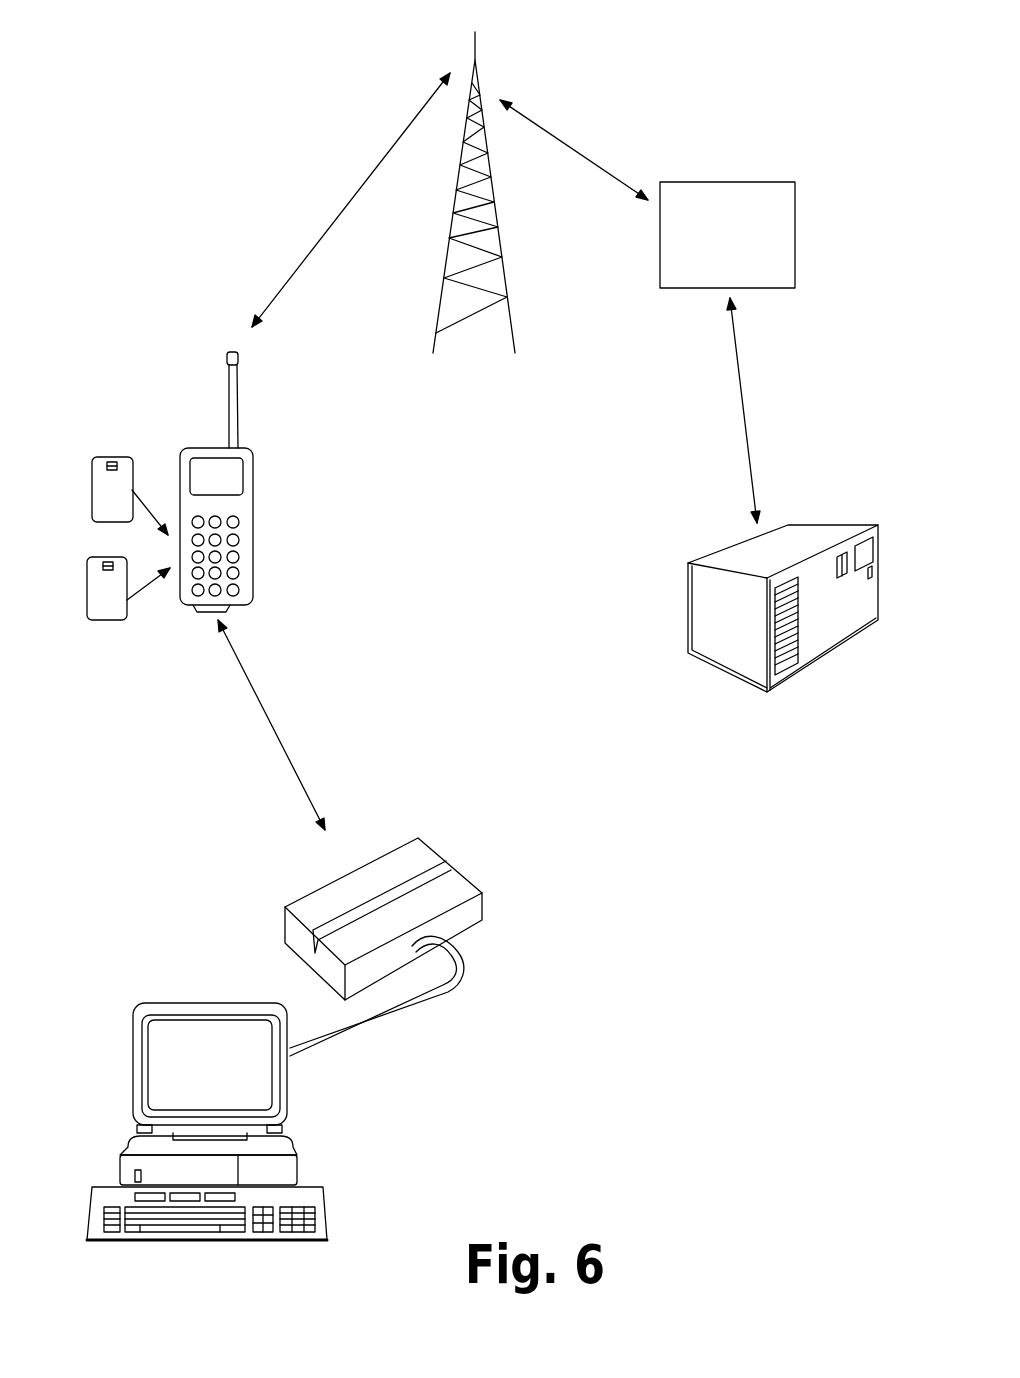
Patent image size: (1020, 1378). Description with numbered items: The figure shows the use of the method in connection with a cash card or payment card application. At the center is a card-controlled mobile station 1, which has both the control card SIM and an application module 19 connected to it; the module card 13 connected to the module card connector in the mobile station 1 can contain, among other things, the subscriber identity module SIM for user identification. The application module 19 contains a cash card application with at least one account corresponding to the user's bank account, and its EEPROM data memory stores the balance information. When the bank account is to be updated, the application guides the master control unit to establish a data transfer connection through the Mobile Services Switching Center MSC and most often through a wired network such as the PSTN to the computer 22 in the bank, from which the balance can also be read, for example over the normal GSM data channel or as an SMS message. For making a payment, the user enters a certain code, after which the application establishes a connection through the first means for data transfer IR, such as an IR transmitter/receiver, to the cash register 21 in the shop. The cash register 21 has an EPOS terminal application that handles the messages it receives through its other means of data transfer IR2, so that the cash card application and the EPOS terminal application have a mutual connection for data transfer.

The mobile station 1 is at (255, 530).
The module card 13 is at (92, 510).
The application module 19 is at (103, 569).
The cash register 21 is at (170, 1003).
The computer in the bank 22 is at (818, 523).
The Mobile Services Switching Center MSC is at (483, 84).
The public switched telephone network PSTN is at (727, 235).
The subscriber identity module SIM is at (113, 462).
The first means for data transfer IR is at (202, 612).
The other means of data transfer IR2 is at (355, 868).